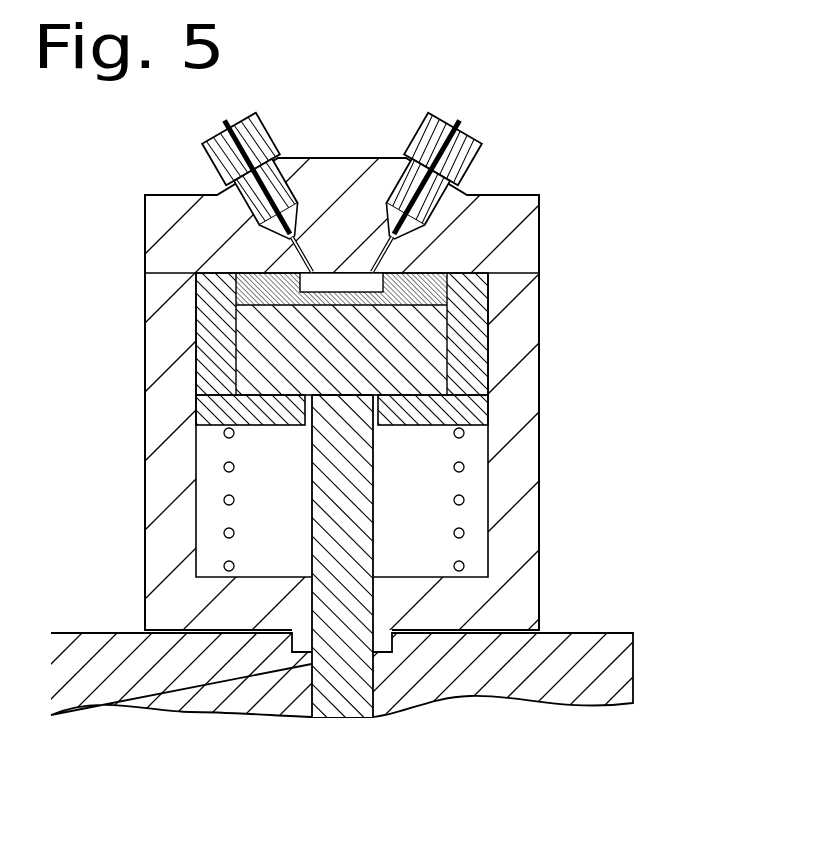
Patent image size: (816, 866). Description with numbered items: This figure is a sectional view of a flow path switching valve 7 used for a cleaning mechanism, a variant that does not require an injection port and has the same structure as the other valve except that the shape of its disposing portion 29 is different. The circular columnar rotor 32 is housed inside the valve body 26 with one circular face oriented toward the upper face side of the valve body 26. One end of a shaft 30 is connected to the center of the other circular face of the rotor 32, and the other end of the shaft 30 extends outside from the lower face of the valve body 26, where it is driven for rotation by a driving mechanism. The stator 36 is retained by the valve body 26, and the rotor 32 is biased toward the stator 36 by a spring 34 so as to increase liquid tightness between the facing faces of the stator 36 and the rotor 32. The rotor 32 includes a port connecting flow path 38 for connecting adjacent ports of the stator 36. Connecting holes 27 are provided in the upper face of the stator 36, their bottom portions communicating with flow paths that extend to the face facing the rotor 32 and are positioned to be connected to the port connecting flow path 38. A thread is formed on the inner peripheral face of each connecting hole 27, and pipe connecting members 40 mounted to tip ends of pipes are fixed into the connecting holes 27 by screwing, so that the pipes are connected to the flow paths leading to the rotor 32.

The flow path switching valve 7 is at (408, 412).
The valve body 26 is at (540, 581).
The connecting hole 27 is at (250, 210).
The disposing portion 29 is at (622, 664).
The shaft 30 is at (357, 494).
The rotor 32 is at (437, 290).
The spring 34 is at (464, 533).
The stator 36 is at (475, 272).
The port connecting flow path 38 is at (342, 282).
The pipe connecting member 40 is at (217, 153).